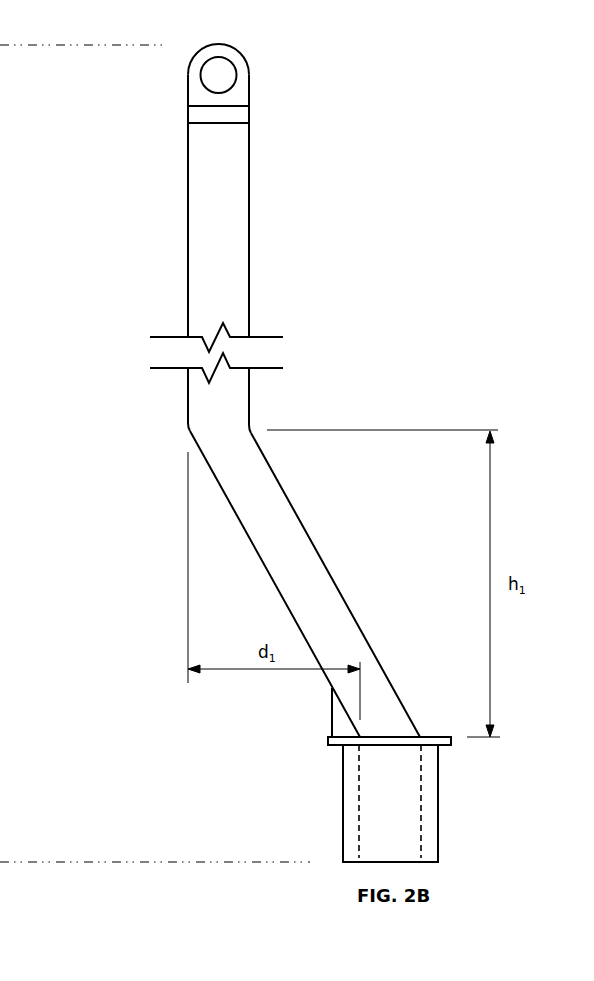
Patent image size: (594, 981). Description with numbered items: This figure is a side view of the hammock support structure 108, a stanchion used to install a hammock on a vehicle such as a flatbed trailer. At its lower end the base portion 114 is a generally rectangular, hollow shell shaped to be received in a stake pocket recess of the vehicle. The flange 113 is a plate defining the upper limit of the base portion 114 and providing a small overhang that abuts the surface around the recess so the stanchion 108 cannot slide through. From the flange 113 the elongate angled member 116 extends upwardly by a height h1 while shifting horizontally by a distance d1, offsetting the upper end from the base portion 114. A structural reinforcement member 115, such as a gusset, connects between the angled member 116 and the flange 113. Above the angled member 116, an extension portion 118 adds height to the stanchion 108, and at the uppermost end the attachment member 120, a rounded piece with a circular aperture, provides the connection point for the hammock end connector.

The hammock support structure 108 is at (368, 308).
The flange 113 is at (438, 737).
The base portion 114 is at (438, 785).
The structural reinforcement member 115 is at (332, 723).
The elongate angled member 116 is at (313, 542).
The extension portion 118 is at (188, 230).
The attachment member 120 is at (247, 62).